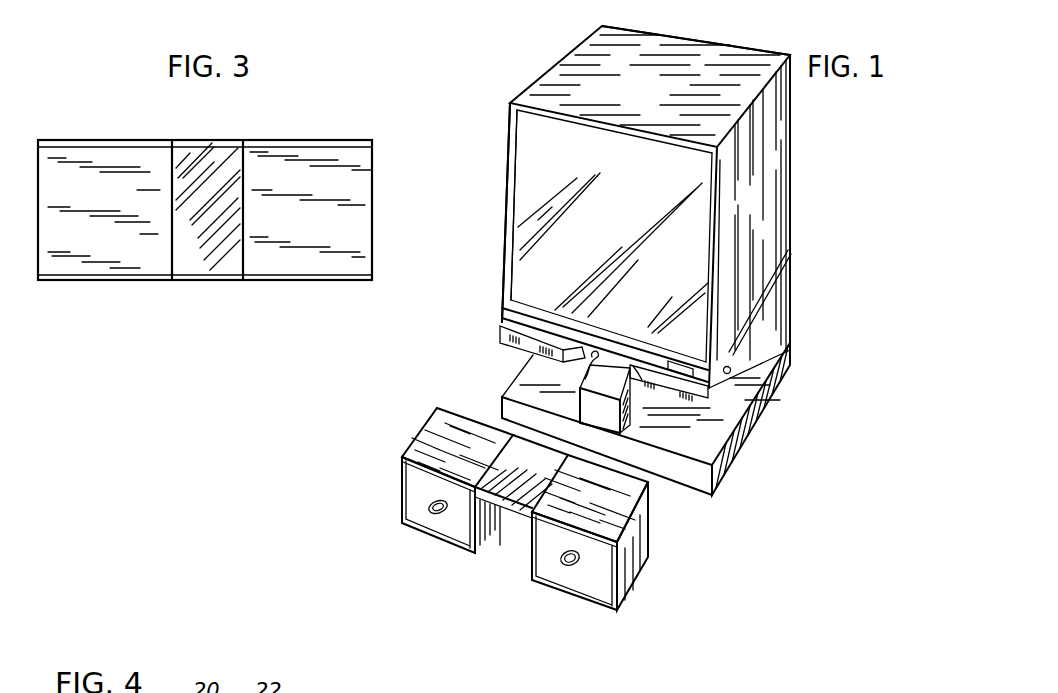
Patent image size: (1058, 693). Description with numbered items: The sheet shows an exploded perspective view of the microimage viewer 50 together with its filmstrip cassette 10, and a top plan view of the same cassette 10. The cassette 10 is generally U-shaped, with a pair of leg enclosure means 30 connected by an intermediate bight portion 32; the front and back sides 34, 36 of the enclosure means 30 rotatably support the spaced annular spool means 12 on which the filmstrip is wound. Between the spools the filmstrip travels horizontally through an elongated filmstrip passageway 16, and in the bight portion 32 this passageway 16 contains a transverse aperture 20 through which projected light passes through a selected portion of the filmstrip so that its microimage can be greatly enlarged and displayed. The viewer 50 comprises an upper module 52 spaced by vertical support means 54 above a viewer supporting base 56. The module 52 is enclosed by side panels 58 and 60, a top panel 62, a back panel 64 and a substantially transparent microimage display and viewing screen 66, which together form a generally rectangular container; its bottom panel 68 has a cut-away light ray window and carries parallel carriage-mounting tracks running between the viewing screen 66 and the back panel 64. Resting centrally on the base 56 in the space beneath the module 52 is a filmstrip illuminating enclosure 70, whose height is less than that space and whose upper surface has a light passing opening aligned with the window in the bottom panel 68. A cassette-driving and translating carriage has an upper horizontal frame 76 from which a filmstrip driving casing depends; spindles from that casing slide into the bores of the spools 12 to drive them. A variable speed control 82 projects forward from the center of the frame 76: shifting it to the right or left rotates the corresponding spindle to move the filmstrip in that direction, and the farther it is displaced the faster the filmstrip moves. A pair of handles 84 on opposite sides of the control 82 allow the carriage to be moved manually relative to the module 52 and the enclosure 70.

In FIG. 3, the cassette 10 is at (354, 135).
In FIG. 1, the cassette 10 is at (652, 573).
In FIG. 1, the spool means 12 is at (430, 502).
In FIG. 3, the elongated filmstrip passageway 16 is at (144, 263).
In FIG. 3, the transverse aperture 20 is at (226, 196).
In FIG. 1, the transverse aperture 20 is at (518, 490).
In FIG. 3, the leg enclosure means 30 is at (78, 258).
In FIG. 1, the leg enclosure means 30 is at (438, 527).
In FIG. 3, the bight portion 32 is at (241, 130).
In FIG. 3, the front side 34 is at (290, 280).
In FIG. 1, the front side 34 is at (410, 478).
In FIG. 3, the back side 36 is at (287, 140).
In FIG. 1, the viewer 50 is at (800, 164).
In FIG. 1, the upper module 52 is at (800, 139).
In FIG. 1, the vertical support means 54 is at (784, 310).
In FIG. 1, the viewer supporting base 56 is at (735, 410).
In FIG. 1, the side panel 58 is at (765, 209).
In FIG. 1, the side panel 60 is at (503, 167).
In FIG. 1, the top panel 62 is at (653, 104).
In FIG. 1, the back panel 64 is at (697, 40).
In FIG. 1, the microimage display and viewing screen 66 is at (636, 217).
In FIG. 1, the bottom panel 68 is at (745, 315).
In FIG. 1, the filmstrip illuminating enclosure 70 is at (614, 420).
In FIG. 1, the horizontal frame 76 is at (497, 335).
In FIG. 1, the variable speed control 82 is at (585, 379).
In FIG. 1, the handles 84 is at (521, 343).